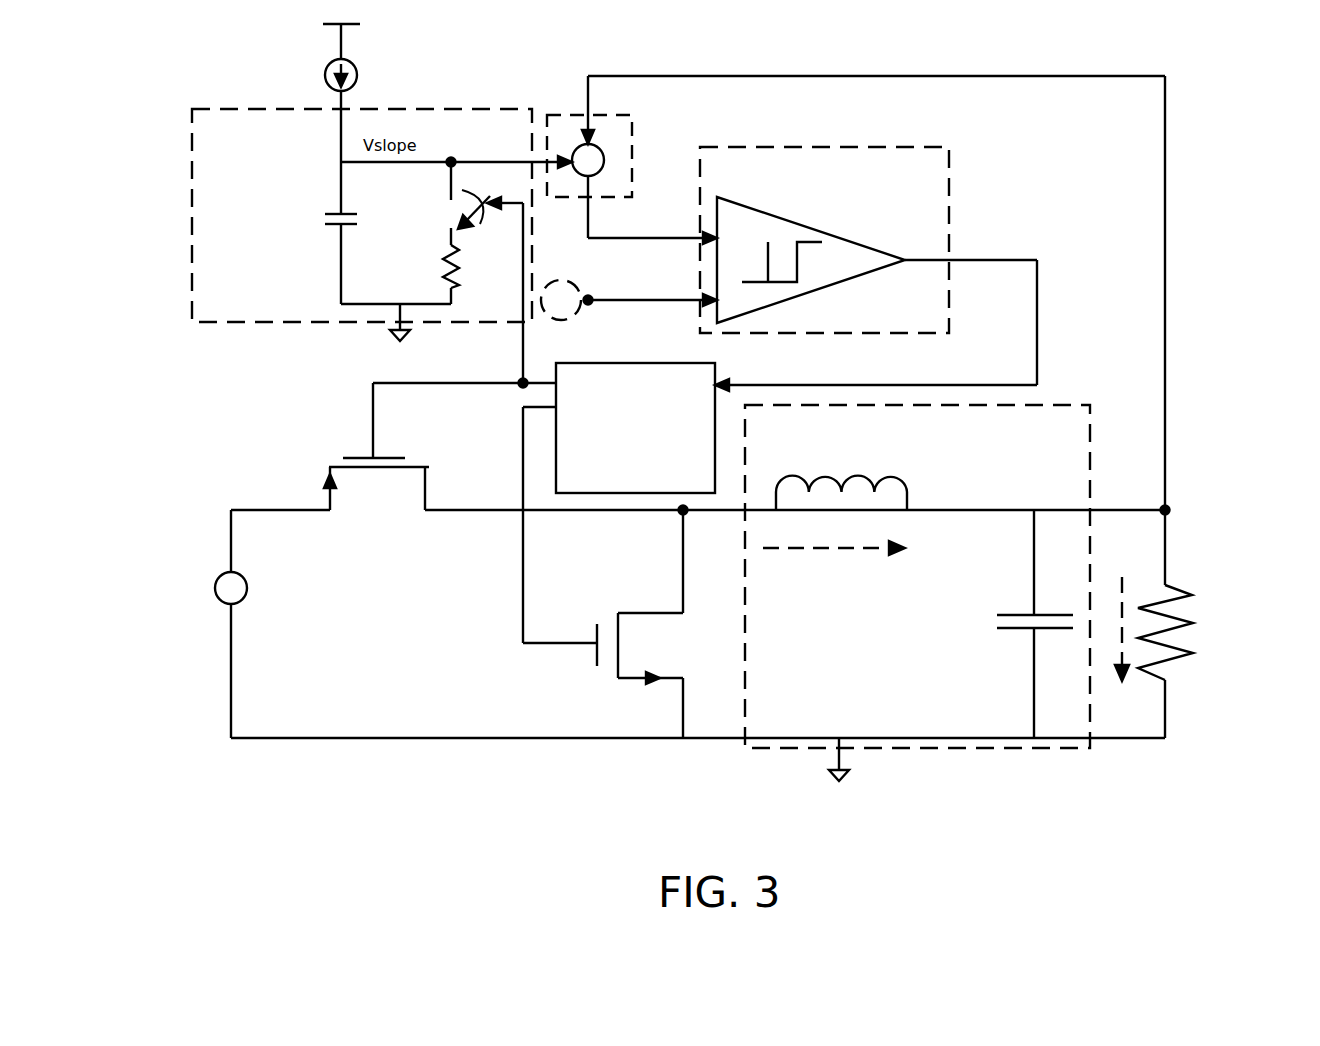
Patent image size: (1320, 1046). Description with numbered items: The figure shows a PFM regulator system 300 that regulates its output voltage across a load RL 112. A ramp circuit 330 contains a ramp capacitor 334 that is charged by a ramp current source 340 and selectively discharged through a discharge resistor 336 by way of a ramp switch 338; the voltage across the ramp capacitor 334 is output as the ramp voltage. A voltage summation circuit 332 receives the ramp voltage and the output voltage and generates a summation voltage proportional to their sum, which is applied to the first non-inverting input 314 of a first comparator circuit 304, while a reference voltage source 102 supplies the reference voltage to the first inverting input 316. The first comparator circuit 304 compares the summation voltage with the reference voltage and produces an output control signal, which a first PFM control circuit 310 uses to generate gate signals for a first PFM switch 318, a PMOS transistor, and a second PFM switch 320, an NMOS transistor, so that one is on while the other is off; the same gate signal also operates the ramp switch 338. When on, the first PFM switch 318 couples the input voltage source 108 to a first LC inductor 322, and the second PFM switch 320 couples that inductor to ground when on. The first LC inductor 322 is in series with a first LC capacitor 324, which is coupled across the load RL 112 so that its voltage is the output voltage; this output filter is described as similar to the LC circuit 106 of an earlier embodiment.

The PFM regulator system 300 is at (890, 832).
The ramp current source 340 is at (322, 72).
The ramp circuit 330 is at (208, 223).
The ramp capacitor 334 is at (339, 222).
The discharge resistor 336 is at (450, 249).
The ramp switch 338 is at (462, 216).
The voltage summation circuit 332 is at (562, 118).
The first comparator circuit 304 is at (746, 150).
The first non-inverting input 314 is at (700, 236).
The first inverting input 316 is at (702, 302).
The reference voltage source 102 is at (570, 314).
The first PFM control circuit 310 is at (635, 428).
The first PFM switch 318 is at (372, 488).
The second PFM switch 320 is at (668, 641).
The first LC inductor 322 is at (813, 498).
The first LC capacitor 324 is at (1016, 624).
The LC circuit 106 is at (886, 724).
The input voltage source 108 is at (225, 600).
The load RL 112 is at (1194, 624).